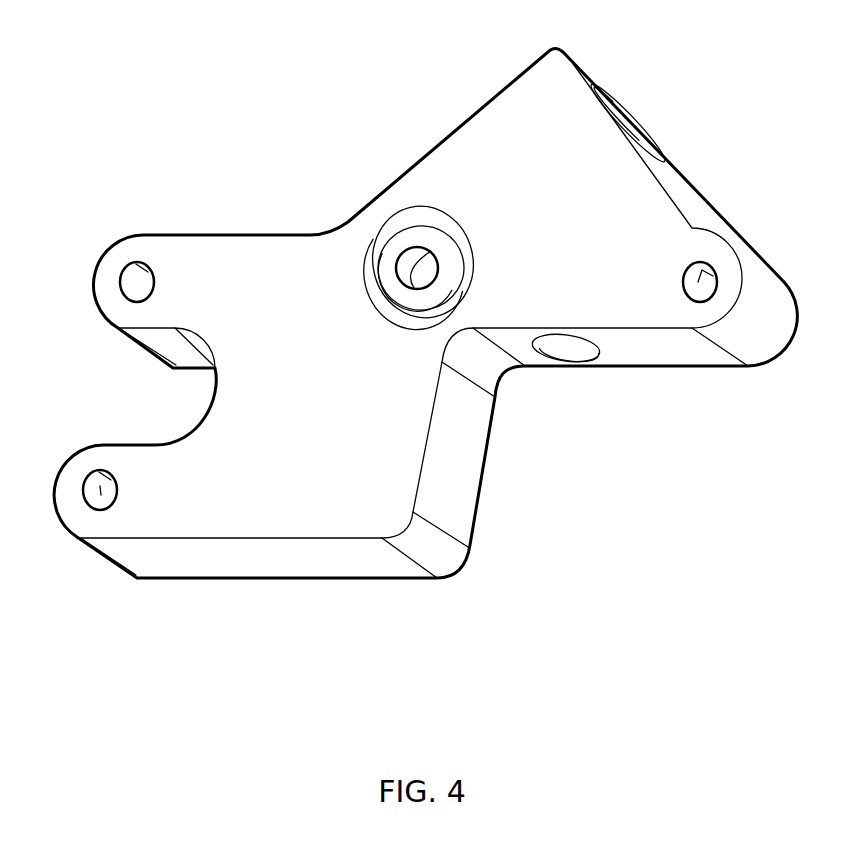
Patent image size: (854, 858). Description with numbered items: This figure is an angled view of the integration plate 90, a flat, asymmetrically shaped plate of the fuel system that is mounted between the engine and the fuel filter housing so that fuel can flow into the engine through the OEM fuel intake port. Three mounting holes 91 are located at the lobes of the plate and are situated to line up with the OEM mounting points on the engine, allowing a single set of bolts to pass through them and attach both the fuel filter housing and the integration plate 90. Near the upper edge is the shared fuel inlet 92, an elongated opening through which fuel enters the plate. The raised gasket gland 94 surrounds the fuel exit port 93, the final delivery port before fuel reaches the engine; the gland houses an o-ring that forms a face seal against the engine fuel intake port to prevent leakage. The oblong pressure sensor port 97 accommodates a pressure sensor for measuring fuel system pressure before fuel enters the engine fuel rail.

The integration plate 90 is at (348, 500).
The mounting holes 91 is at (136, 278).
The shared fuel inlet 92 is at (628, 128).
The fuel exit port 93 is at (410, 268).
The gasket gland 94 is at (435, 225).
The pressure sensor port 97 is at (568, 347).